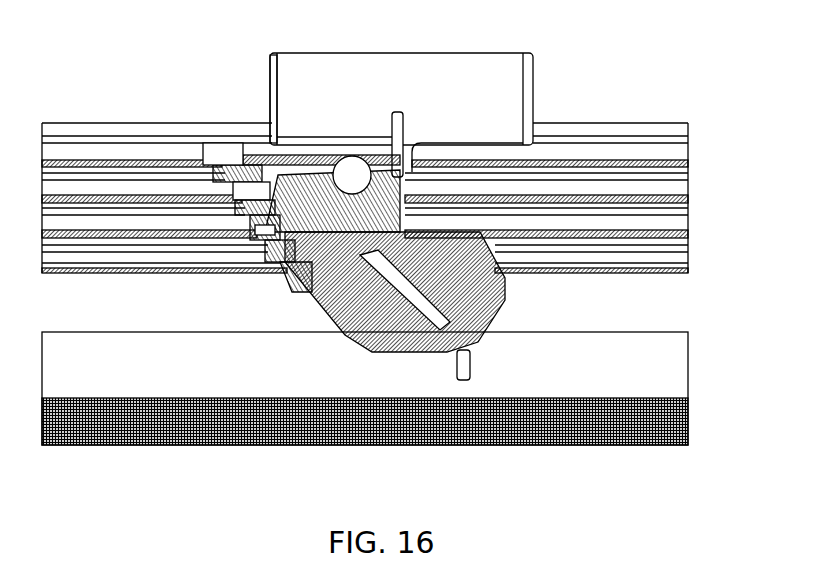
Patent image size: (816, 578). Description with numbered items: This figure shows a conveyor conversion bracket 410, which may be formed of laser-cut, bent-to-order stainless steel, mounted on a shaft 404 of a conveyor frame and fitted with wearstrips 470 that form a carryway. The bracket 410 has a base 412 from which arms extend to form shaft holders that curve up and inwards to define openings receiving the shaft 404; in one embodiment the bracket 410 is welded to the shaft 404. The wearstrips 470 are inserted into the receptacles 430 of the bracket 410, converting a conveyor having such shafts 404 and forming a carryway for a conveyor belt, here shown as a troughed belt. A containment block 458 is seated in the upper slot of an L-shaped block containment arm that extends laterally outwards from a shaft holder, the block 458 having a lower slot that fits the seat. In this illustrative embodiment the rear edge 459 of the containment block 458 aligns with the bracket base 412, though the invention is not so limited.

The shaft 404 is at (453, 290).
The conveyor bracket 410 is at (330, 315).
The base 412 is at (348, 290).
The receptacle 430 is at (221, 155).
The containment block 458 is at (420, 55).
The rear edge 459 is at (270, 82).
The wearstrips 470 is at (615, 225).